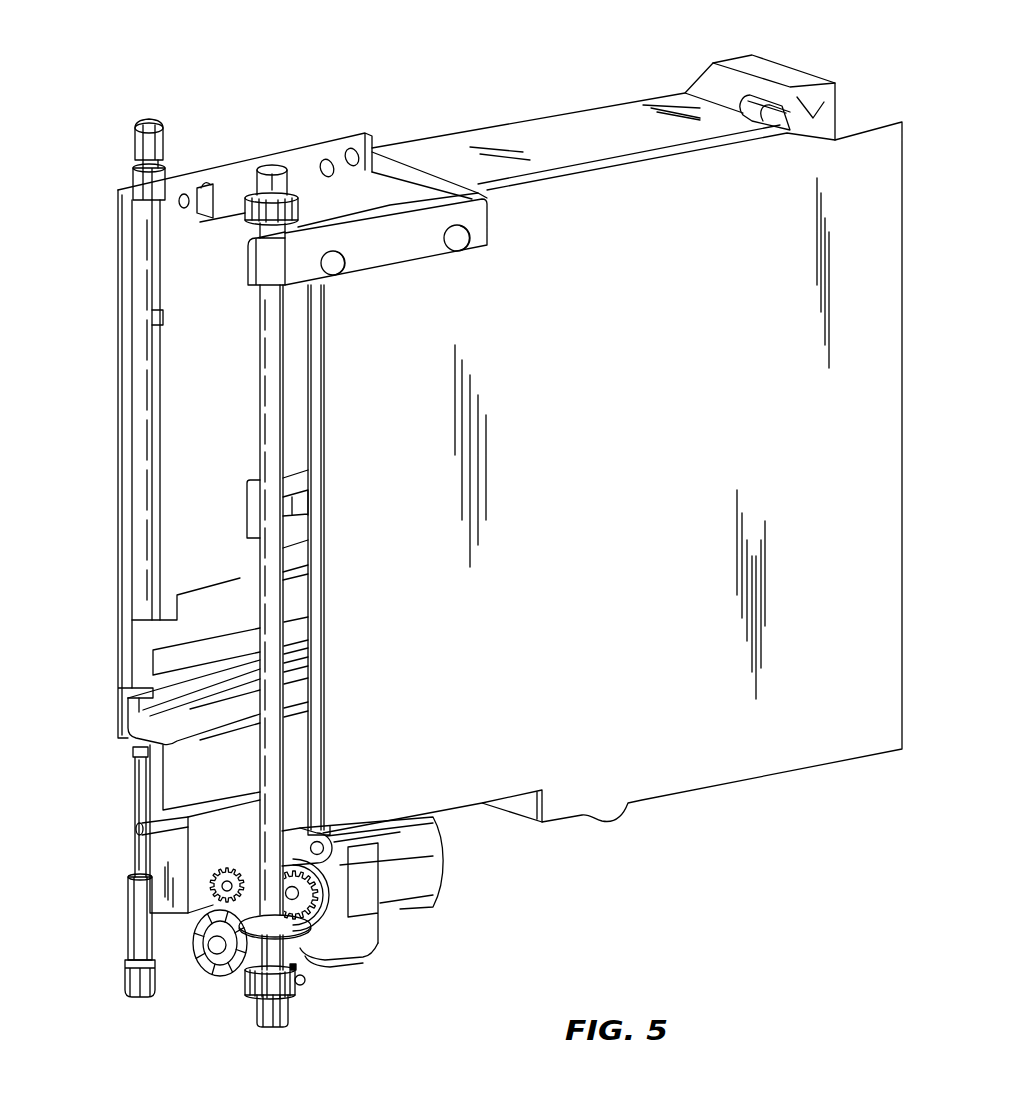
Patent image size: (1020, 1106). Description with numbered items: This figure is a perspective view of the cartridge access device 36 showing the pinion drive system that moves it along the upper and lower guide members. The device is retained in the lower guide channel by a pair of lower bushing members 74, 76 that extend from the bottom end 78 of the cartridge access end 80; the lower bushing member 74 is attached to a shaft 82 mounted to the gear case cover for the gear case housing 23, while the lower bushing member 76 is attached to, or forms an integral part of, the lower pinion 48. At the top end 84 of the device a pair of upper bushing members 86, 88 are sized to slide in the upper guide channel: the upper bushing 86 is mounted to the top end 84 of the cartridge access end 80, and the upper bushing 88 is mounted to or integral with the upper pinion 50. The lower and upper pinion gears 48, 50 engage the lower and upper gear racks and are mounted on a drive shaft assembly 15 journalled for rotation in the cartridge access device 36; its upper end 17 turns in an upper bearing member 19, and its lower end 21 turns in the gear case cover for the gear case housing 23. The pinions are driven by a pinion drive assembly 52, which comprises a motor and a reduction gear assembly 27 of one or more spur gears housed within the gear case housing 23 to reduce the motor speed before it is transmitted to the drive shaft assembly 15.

The cartridge access device 36 is at (252, 46).
The upper bushing member 86 is at (135, 128).
The upper bushing member 88 is at (257, 187).
The top end 84 is at (120, 210).
The upper pinion gear 50 is at (247, 215).
The upper bearing member 19 is at (388, 268).
The upper end of drive shaft assembly 17 is at (285, 360).
The drive shaft assembly 15 is at (294, 443).
The cartridge access end 80 is at (118, 500).
The bottom end 78 is at (122, 742).
The lower end of drive shaft 21 is at (310, 760).
The reduction gear assembly 27 is at (206, 865).
The pinion drive assembly 52 is at (456, 881).
The shaft 82 is at (128, 920).
The gear case housing 23 is at (370, 967).
The lower bushing member 74 is at (125, 968).
The lower bushing member 76 is at (257, 1012).
The lower pinion gear 48 is at (298, 998).